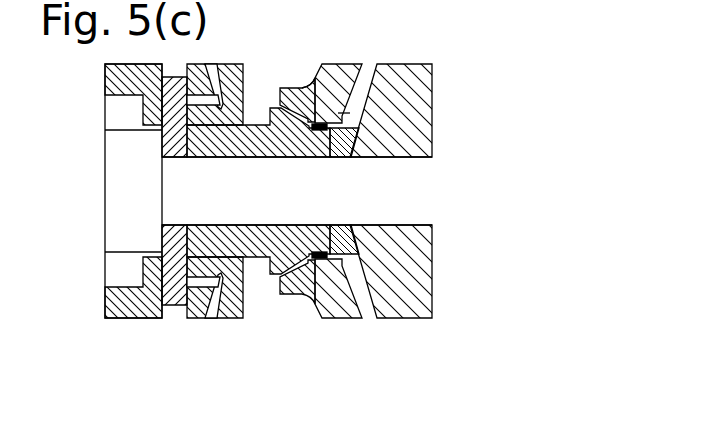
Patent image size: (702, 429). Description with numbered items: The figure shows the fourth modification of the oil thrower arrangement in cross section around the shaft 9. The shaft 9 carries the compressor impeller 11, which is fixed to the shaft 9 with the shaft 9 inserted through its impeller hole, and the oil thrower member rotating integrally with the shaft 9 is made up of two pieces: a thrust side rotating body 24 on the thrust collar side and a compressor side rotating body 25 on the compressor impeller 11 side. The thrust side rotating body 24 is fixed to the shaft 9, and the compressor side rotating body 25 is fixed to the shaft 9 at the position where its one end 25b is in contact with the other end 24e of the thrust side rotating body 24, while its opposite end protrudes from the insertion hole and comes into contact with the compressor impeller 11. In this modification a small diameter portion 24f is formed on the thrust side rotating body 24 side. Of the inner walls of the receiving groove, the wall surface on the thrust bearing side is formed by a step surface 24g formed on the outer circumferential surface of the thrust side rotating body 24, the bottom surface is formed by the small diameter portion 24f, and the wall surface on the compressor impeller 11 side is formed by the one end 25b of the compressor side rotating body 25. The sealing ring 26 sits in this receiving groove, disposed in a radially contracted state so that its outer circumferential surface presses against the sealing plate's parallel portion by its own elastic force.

The shaft 9 is at (304, 194).
The compressor impeller 11 is at (414, 318).
The thrust side rotating body 24 is at (258, 257).
The other end of the thrust side rotating body 24e is at (374, 155).
The small diameter portion 24f is at (344, 113).
The step surface 24g is at (315, 77).
The compressor side rotating body 25 is at (347, 290).
The one end of the compressor side rotating body 25b is at (325, 132).
The sealing ring 26 is at (316, 298).